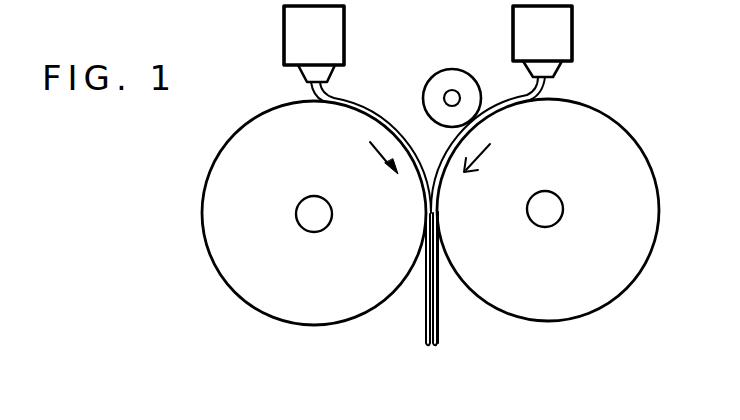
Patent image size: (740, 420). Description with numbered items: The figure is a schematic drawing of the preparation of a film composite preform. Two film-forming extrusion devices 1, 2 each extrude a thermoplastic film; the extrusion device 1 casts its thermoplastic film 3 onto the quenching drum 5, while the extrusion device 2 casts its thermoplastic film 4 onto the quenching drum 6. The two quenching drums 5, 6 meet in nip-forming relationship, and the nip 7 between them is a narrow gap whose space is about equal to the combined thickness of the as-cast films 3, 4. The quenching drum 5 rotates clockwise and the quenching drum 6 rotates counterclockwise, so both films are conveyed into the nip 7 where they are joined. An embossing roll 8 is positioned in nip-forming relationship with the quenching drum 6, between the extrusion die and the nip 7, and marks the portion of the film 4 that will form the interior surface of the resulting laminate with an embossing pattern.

The film-forming extrusion device 1 is at (338, 31).
The film-forming extrusion device 2 is at (572, 32).
The thermoplastic film 3 is at (330, 96).
The thermoplastic film 4 is at (548, 92).
The quenching drum 5 is at (213, 167).
The quenching drum 6 is at (632, 136).
The nip 7 is at (431, 190).
The embossing roll 8 is at (463, 69).